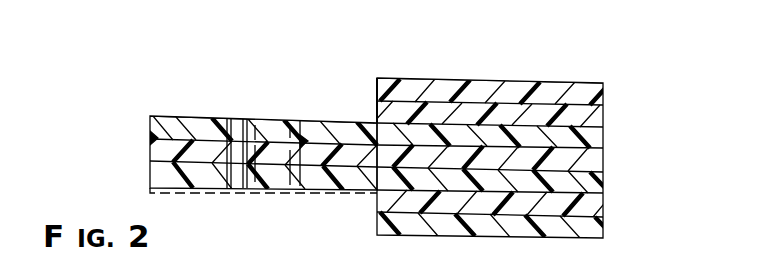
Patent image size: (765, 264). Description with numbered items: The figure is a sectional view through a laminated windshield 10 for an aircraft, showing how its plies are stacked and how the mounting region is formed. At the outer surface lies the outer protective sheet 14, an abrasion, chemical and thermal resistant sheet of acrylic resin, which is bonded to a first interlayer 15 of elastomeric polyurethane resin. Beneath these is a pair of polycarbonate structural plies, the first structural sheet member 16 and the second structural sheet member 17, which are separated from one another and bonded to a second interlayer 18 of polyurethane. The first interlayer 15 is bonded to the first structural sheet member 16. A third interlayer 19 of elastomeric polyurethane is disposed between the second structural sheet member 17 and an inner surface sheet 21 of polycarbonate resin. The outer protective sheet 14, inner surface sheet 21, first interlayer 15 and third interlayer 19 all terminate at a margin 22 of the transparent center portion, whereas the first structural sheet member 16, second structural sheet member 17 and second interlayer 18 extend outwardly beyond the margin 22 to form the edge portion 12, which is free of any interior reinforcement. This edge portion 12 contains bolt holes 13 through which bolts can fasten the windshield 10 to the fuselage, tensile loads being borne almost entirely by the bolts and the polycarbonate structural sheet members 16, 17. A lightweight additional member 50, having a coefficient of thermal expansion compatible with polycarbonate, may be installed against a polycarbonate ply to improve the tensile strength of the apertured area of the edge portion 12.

The laminated windshield 10 is at (503, 57).
The edge portion 12 is at (172, 116).
The bolt holes 13 is at (292, 173).
The outer protective sheet 14 is at (592, 97).
The first interlayer 15 is at (592, 125).
The first structural sheet member 16 is at (592, 143).
The second structural sheet member 17 is at (600, 180).
The second interlayer 18 is at (593, 158).
The third interlayer 19 is at (600, 207).
The inner surface sheet 21 is at (600, 232).
The margin 22 is at (377, 78).
The additional member 50 is at (187, 195).